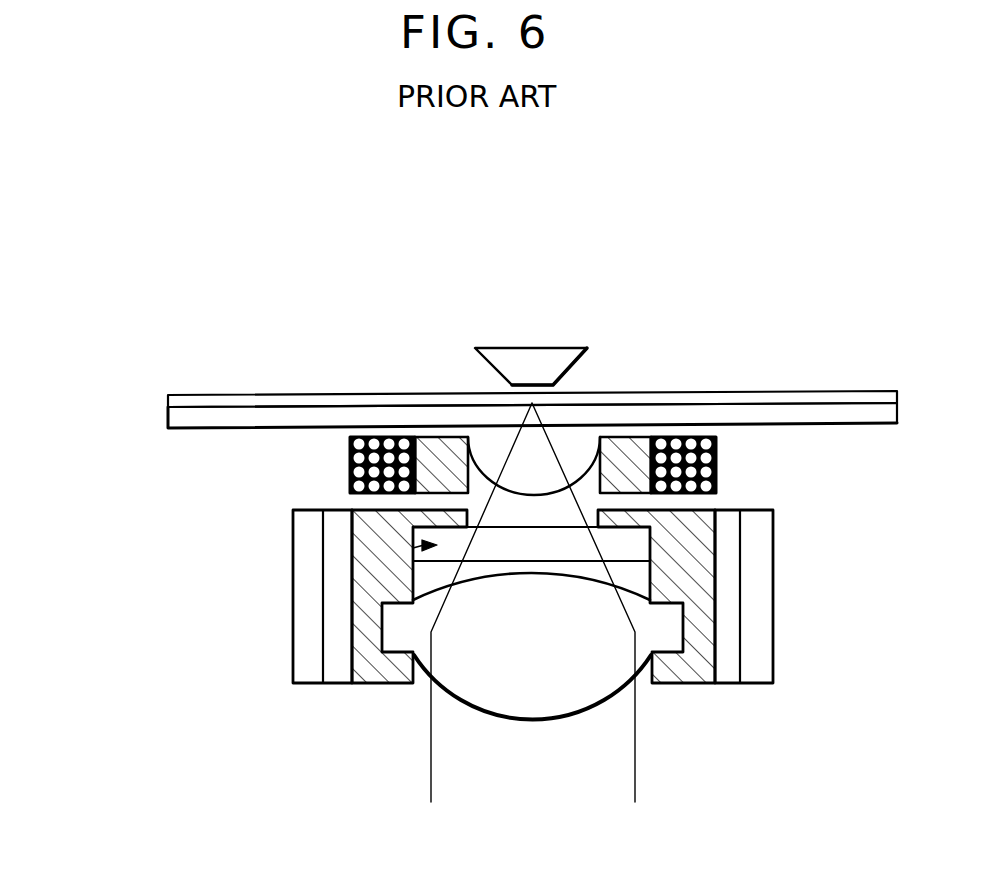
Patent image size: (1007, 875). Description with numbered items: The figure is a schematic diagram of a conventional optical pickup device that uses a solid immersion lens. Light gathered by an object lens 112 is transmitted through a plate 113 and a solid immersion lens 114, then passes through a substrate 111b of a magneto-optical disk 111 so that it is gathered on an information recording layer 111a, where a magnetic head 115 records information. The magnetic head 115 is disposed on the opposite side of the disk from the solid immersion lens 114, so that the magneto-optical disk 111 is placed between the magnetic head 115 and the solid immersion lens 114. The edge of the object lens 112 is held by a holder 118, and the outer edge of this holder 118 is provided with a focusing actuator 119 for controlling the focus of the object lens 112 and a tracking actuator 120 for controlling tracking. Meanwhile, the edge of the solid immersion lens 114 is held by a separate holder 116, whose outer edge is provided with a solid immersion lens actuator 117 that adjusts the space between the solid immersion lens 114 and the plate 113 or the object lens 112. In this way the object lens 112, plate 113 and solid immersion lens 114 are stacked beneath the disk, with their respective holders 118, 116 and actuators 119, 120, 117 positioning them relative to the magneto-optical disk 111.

The magneto-optical disk 111 is at (461, 404).
The information recording layer 111a is at (225, 400).
The substrate 111b is at (502, 441).
The object lens 112 is at (613, 687).
The plate 113 is at (418, 548).
The solid immersion lens 114 is at (573, 447).
The magnetic head 115 is at (507, 348).
The holder 116 is at (635, 443).
The solid immersion lens actuator 117 is at (718, 477).
The holder 118 is at (385, 675).
The focusing actuator 119 is at (337, 675).
The tracking actuator 120 is at (297, 540).